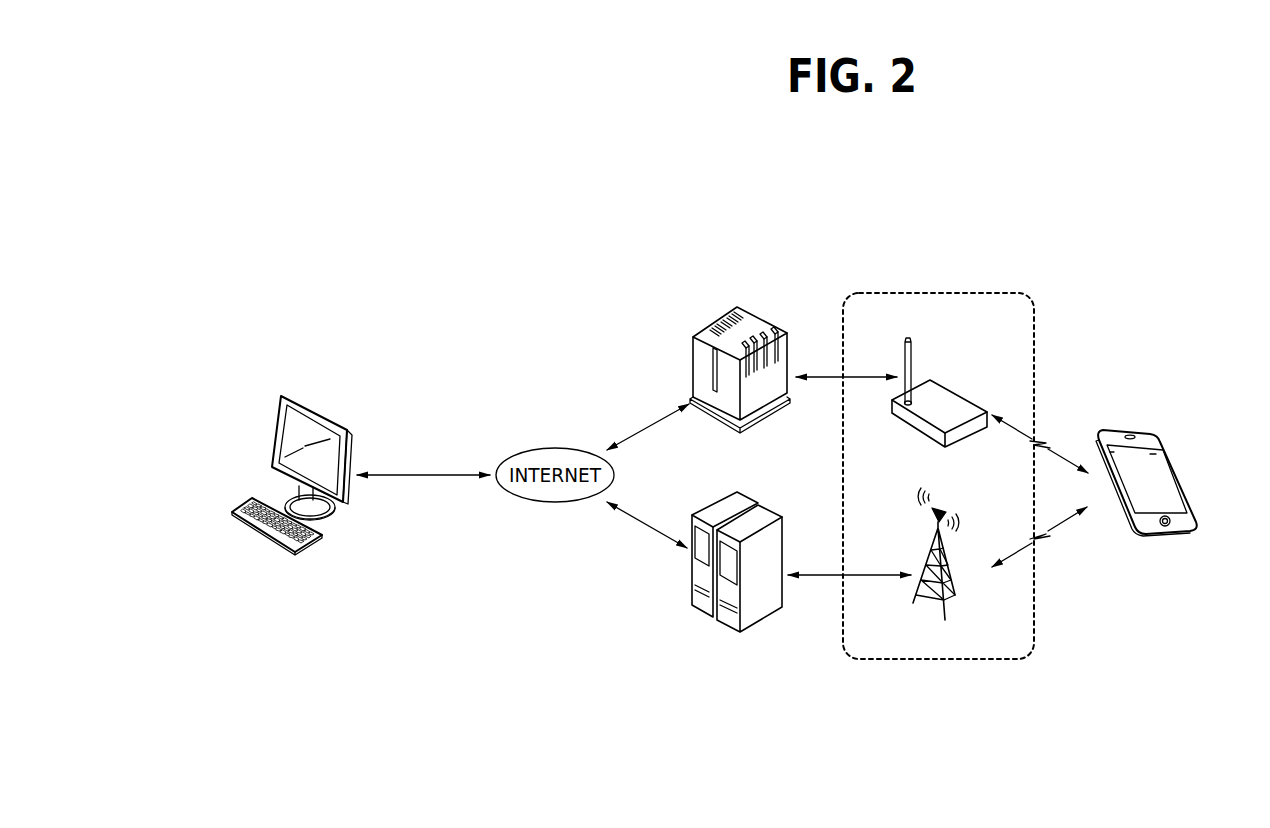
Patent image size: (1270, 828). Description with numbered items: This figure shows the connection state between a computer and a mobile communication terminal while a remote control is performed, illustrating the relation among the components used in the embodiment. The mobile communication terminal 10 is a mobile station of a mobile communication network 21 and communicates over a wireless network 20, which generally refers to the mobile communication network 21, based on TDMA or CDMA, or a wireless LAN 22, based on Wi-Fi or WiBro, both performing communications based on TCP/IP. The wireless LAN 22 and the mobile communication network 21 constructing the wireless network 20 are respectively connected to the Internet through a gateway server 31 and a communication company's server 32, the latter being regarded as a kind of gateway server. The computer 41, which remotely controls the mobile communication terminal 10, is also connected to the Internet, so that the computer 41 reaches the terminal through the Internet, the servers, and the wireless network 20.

The mobile communication terminal 10 is at (1110, 435).
The wireless network 20 is at (948, 293).
The mobile communication network 21 is at (923, 565).
The wireless LAN 22 is at (943, 387).
The gateway server 31 is at (758, 323).
The communication company's server 32 is at (725, 597).
The computer 41 is at (317, 408).